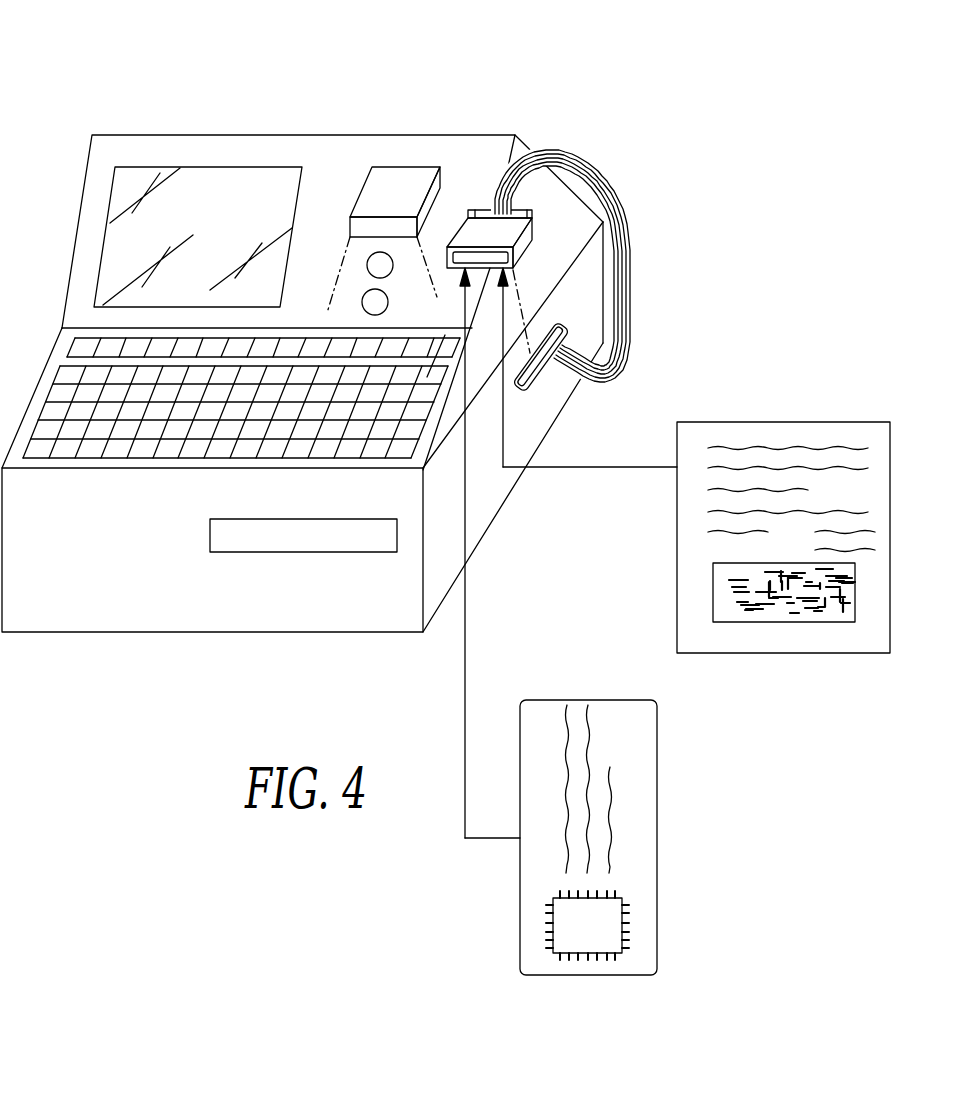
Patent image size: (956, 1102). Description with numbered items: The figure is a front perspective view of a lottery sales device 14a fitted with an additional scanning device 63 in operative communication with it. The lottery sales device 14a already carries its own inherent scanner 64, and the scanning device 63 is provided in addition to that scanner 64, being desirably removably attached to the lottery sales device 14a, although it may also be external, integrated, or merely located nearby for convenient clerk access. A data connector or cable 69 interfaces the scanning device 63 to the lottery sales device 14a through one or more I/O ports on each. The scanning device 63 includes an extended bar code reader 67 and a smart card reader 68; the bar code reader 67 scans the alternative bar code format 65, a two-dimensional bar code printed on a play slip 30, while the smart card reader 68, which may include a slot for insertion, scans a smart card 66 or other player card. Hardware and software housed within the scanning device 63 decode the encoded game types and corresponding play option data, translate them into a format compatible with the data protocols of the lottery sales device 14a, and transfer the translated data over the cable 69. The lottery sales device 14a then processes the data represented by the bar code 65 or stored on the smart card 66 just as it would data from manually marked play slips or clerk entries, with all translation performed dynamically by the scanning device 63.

The lottery sales device 14a is at (112, 108).
The scanner 64 is at (396, 188).
The scanning device 63 is at (527, 254).
The smart card reader 68 is at (507, 258).
The extended bar code reader 67 is at (448, 273).
The data connector or cable 69 is at (624, 292).
The play slip 30 is at (783, 531).
The alternative bar code format 65 is at (807, 622).
The smart card 66 is at (647, 801).